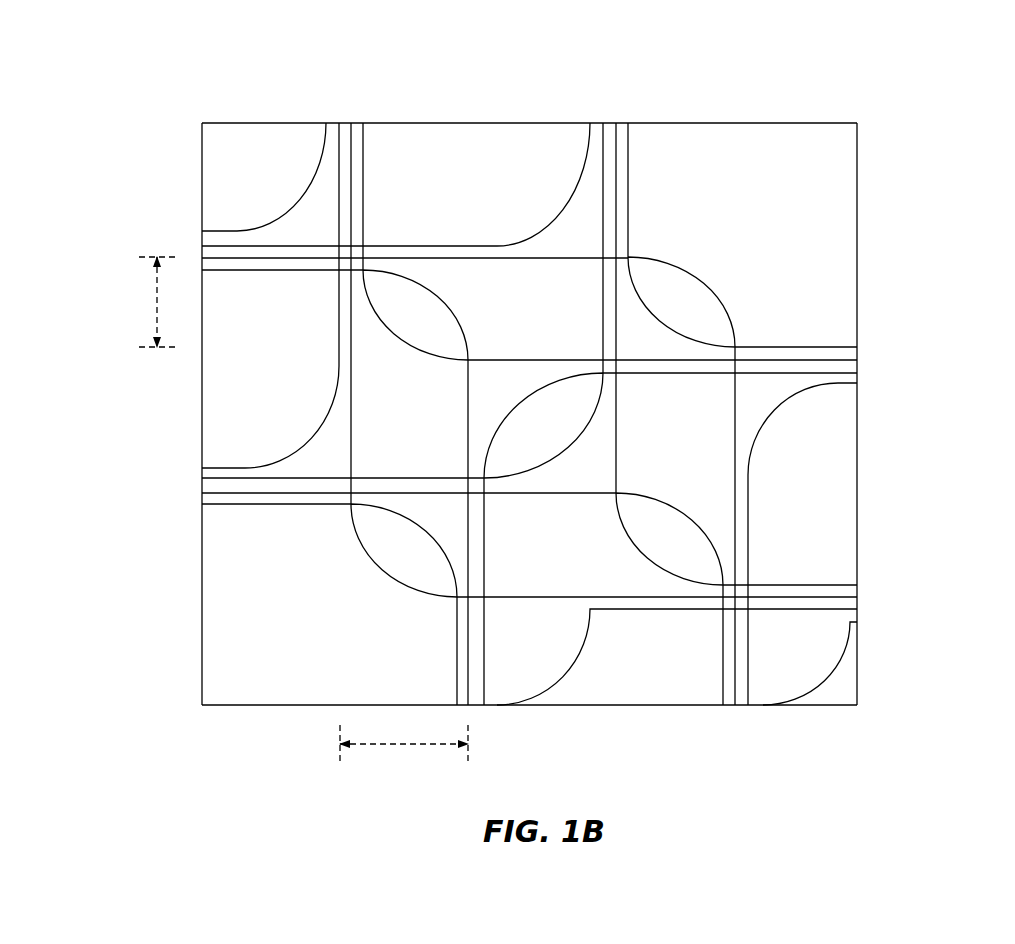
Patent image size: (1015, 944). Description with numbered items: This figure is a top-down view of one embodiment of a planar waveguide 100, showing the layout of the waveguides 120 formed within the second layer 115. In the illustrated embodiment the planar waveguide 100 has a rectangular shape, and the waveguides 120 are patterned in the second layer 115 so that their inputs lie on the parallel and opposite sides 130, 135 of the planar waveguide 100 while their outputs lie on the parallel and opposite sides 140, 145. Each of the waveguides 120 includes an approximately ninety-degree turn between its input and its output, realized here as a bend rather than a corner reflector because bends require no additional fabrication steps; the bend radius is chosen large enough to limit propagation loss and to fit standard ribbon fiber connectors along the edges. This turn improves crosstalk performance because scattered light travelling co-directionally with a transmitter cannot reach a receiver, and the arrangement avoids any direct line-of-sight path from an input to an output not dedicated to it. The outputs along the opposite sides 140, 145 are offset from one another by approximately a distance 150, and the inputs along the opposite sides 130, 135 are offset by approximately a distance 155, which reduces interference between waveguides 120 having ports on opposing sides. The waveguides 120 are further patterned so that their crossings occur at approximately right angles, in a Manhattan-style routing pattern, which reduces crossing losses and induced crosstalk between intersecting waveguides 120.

The planar waveguide 100 is at (890, 80).
The second layer 115 is at (828, 296).
The waveguides 120 is at (630, 187).
The side of the planar waveguide 130 is at (202, 605).
The side of the planar waveguide 135 is at (858, 553).
The side of the planar waveguide 140 is at (508, 122).
The side of the planar waveguide 145 is at (568, 707).
The distance 150 is at (420, 745).
The distance 155 is at (155, 303).